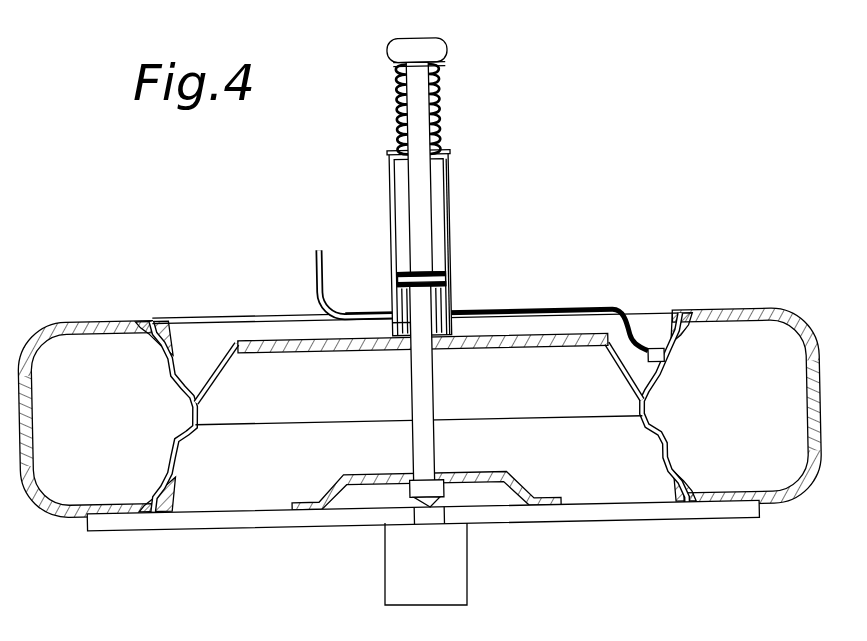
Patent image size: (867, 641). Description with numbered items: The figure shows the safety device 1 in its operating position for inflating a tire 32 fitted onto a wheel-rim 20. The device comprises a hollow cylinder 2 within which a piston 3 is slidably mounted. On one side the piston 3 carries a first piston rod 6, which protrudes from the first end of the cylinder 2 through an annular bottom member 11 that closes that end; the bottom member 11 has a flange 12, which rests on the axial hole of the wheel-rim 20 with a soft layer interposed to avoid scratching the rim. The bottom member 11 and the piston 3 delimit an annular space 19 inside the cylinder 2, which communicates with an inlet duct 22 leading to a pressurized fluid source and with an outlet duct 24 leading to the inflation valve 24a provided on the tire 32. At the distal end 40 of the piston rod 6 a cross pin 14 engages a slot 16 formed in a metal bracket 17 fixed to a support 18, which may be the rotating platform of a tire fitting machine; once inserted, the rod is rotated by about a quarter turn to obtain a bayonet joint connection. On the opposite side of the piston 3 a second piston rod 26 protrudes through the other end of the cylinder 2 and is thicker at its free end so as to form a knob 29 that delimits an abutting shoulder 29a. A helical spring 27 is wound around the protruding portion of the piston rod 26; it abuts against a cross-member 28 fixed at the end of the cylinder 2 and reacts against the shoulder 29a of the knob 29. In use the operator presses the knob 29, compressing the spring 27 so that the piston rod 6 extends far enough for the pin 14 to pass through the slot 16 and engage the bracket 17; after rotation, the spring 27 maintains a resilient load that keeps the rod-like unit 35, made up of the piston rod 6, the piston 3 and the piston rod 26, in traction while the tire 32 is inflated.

The safety device 1 is at (483, 159).
The cylinder 2 is at (397, 221).
The piston 3 is at (438, 272).
The first piston rod 6 is at (432, 397).
The annular bottom member 11 is at (399, 330).
The flange 12 is at (499, 334).
The cross pin 14 is at (398, 508).
The slot 16 is at (435, 476).
The bracket 17 is at (506, 482).
The support 18 is at (557, 526).
The annular space 19 is at (453, 300).
The wheel-rim 20 is at (242, 339).
The inlet duct 22 is at (317, 256).
The outlet duct 24 is at (587, 311).
The inflation valve 24a is at (662, 353).
The second piston rod 26 is at (422, 107).
The helical spring 27 is at (444, 103).
The cross-member 28 is at (392, 154).
The knob 29 is at (423, 45).
The abutting shoulder 29a is at (450, 63).
The tire 32 is at (78, 313).
The rod-like unit 35 is at (437, 208).
The distal end 40 is at (426, 501).